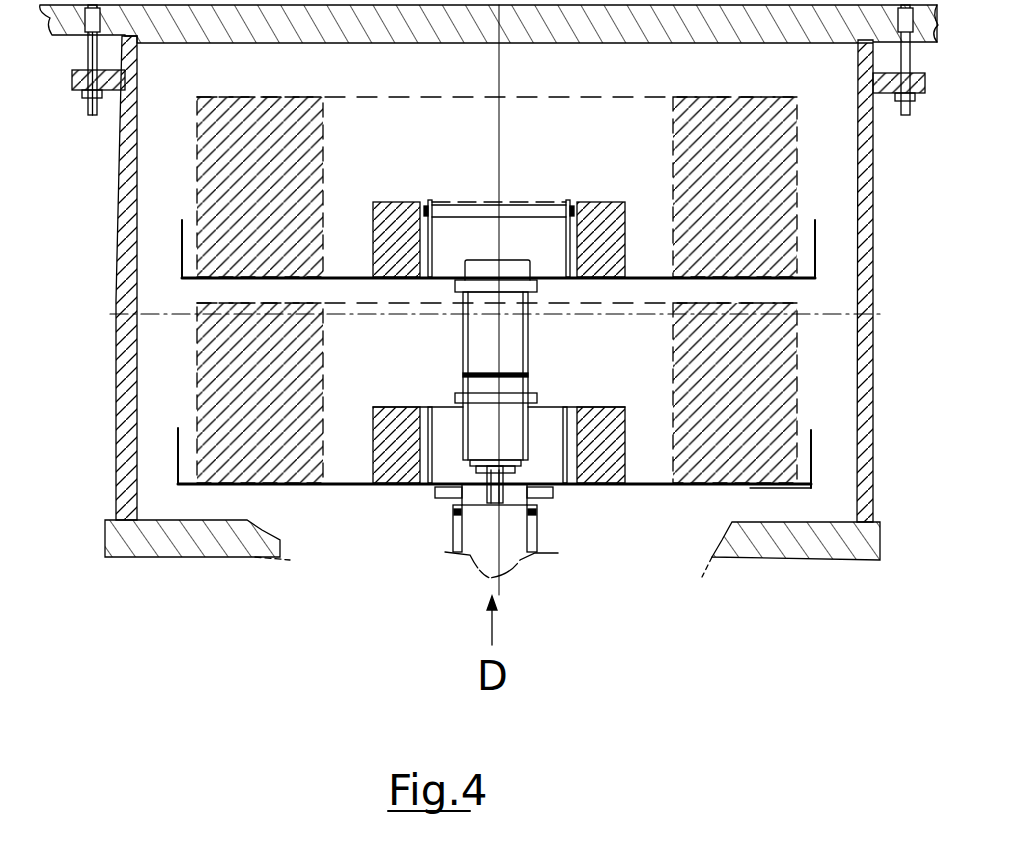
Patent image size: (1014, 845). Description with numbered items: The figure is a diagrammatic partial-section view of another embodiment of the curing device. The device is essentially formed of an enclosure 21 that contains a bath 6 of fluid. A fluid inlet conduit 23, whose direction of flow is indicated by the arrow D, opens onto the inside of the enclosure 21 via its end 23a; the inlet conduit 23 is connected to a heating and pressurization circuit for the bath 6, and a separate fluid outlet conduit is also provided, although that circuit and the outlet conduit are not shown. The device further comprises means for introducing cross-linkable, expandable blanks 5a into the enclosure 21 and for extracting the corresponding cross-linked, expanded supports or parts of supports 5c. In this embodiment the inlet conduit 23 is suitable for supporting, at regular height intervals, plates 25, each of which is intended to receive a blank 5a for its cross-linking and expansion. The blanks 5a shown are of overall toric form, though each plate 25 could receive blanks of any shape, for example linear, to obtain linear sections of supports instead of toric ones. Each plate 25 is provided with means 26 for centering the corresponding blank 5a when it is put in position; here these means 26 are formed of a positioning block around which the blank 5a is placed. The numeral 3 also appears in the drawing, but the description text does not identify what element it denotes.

The shaft 3 is at (463, 350).
The blank 5a is at (628, 260).
The support 5c is at (335, 215).
The bath 6 is at (416, 150).
The enclosure 21 is at (185, 560).
The fluid inlet conduit 23 is at (517, 565).
The end of inlet conduit 23a is at (507, 258).
The plate 25 is at (648, 488).
The centering means 26 is at (555, 204).